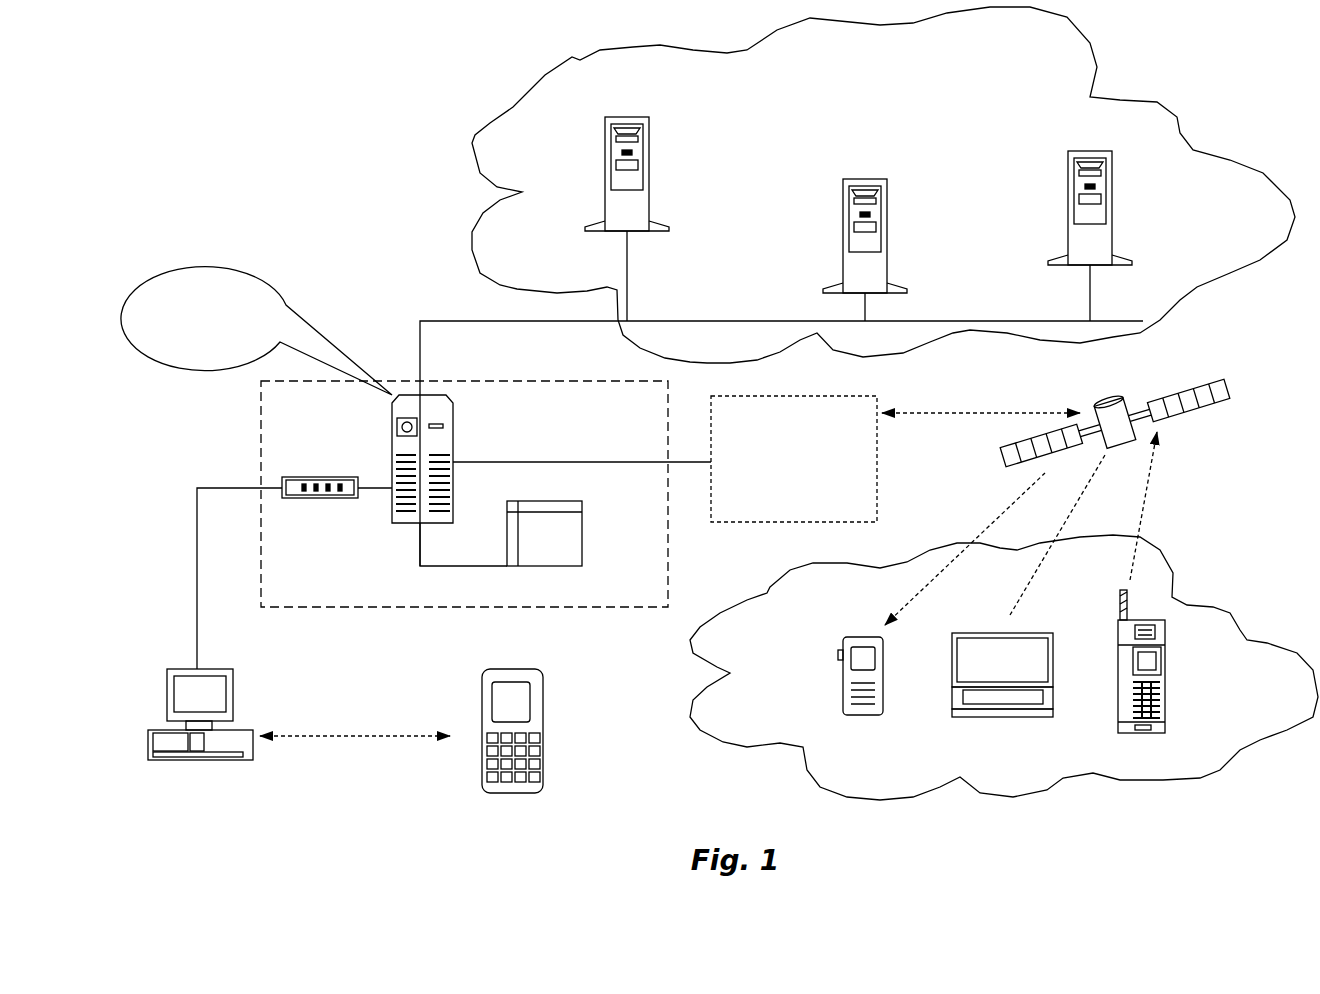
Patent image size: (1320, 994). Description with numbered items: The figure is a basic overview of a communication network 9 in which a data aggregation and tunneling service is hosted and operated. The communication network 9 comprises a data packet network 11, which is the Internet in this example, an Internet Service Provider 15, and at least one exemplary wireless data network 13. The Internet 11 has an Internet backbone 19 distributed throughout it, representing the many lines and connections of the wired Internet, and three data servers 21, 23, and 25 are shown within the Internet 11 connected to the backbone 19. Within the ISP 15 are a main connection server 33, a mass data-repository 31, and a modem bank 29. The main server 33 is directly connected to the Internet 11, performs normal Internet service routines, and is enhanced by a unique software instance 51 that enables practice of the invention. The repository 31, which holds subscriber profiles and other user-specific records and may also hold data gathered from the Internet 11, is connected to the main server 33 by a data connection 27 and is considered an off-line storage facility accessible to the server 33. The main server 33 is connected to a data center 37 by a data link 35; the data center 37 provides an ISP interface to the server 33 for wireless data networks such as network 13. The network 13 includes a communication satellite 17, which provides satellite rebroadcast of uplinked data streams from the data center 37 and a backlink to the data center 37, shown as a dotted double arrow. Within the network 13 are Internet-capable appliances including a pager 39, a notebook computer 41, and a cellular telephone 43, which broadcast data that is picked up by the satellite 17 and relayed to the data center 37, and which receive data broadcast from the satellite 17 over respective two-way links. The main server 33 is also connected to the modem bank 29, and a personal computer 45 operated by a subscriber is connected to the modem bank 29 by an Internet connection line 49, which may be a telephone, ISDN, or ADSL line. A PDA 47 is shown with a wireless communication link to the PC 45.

The communication network 9 is at (328, 192).
The data packet network 11 is at (1178, 118).
The wireless data network 13 is at (1232, 603).
The Internet Service Provider 15 is at (262, 462).
The communication satellite 17 is at (1228, 386).
The Internet backbone 19 is at (657, 321).
The data server 21 is at (649, 176).
The data server 23 is at (887, 228).
The data server 25 is at (1113, 185).
The data connection 27 is at (420, 540).
The modem bank 29 is at (340, 477).
The mass data-repository 31 is at (582, 547).
The main connection server 33 is at (453, 442).
The data link 35 is at (552, 462).
The data center 37 is at (877, 445).
The pager 39 is at (837, 692).
The notebook computer 41 is at (1165, 668).
The cellular telephone 43 is at (952, 662).
The personal computer 45 is at (230, 703).
The PDA 47 is at (543, 726).
The Internet connection line 49 is at (197, 600).
The software instance 51 is at (215, 265).